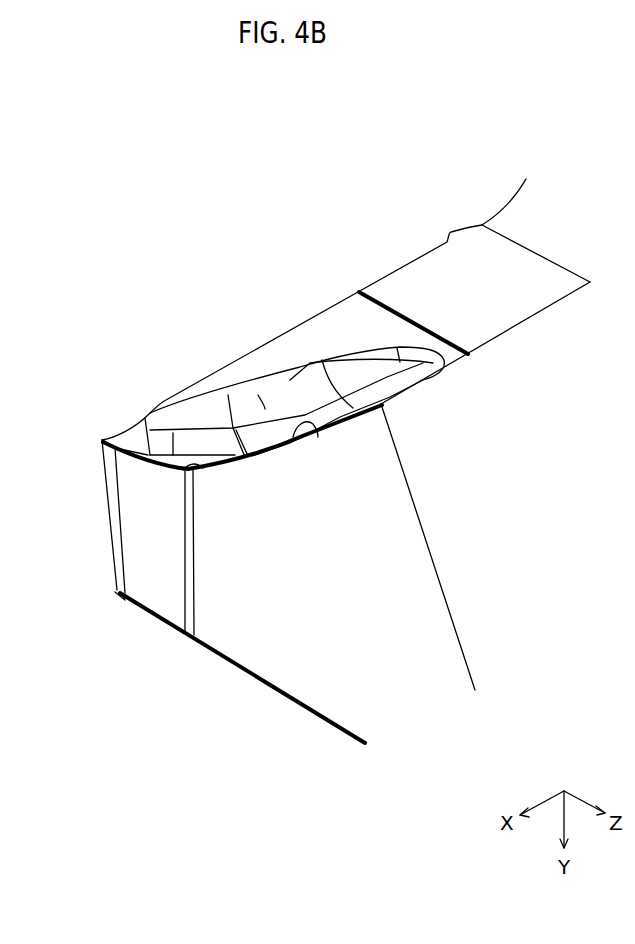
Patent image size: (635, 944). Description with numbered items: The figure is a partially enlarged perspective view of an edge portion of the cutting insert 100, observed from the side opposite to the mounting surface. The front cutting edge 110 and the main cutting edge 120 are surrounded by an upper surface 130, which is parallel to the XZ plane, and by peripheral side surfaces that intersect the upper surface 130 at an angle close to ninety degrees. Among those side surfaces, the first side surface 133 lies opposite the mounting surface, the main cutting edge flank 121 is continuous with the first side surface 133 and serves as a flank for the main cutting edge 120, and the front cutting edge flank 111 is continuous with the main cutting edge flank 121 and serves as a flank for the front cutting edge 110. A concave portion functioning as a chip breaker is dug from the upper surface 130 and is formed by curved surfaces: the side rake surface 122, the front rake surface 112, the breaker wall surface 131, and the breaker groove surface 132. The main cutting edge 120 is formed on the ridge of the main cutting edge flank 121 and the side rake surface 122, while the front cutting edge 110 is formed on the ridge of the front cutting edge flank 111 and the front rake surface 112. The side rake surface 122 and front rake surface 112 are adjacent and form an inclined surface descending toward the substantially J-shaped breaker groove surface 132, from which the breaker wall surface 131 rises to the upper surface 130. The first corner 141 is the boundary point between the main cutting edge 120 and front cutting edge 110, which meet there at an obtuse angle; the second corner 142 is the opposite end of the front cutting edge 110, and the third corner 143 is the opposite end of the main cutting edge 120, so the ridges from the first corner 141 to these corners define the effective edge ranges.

The cutting insert 100 is at (149, 96).
The front cutting edge 110 is at (145, 462).
The front cutting edge flank 111 is at (118, 597).
The front rake surface 112 is at (150, 457).
The main cutting edge 120 is at (268, 423).
The main cutting edge flank 121 is at (275, 623).
The side rake surface 122 is at (300, 423).
The upper surface 130 is at (325, 330).
The breaker wall surface 131 is at (260, 410).
The breaker groove surface 132 is at (287, 433).
The first side surface 133 is at (535, 477).
The first corner 141 is at (212, 468).
The second corner 142 is at (102, 437).
The third corner 143 is at (400, 400).